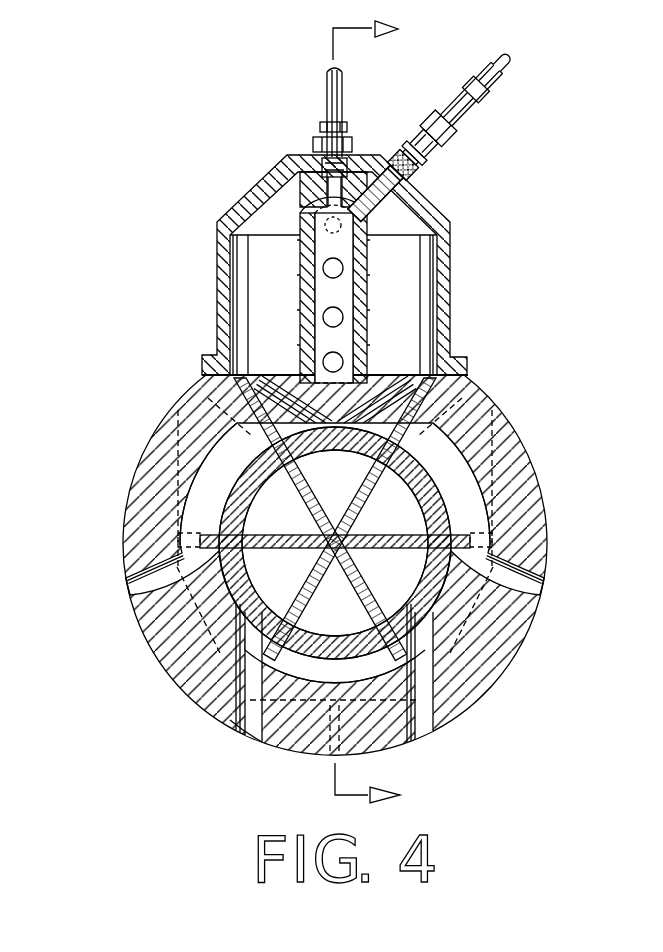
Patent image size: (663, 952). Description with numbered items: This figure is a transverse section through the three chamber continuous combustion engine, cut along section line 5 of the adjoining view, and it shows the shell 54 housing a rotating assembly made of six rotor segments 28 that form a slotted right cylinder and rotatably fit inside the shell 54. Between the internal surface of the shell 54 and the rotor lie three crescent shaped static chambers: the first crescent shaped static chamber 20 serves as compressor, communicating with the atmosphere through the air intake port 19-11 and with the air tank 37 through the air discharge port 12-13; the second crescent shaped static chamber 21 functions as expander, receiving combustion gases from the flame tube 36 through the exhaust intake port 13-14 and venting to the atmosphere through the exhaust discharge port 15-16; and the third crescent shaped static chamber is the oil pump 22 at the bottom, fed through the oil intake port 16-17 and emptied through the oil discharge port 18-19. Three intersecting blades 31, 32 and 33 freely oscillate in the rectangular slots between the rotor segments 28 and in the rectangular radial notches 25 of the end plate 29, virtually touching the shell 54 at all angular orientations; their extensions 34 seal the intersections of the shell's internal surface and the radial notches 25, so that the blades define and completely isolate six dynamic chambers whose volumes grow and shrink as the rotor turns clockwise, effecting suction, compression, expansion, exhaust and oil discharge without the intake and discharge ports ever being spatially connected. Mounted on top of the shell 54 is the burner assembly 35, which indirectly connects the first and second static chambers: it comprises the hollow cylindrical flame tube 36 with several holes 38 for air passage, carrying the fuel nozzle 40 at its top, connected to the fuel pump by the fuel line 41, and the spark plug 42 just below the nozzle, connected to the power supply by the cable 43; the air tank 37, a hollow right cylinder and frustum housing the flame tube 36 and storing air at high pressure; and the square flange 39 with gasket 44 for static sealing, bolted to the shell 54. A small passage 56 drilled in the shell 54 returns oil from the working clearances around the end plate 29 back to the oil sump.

The section line 5- 5 is at (387, 416).
The air discharge port 12-13 is at (248, 382).
The exhaust intake port 13-14 is at (420, 381).
The exhaust discharge port 15-16 is at (535, 596).
The oil intake port 16-17 is at (420, 731).
The oil discharge port 18-19 is at (243, 731).
The air intake port 19-11 is at (135, 594).
The first crescent shaped static chamber 20 is at (207, 487).
The second crescent shaped static chamber 21 is at (465, 487).
The oil pump 22 is at (303, 678).
The radial notches 25 is at (302, 535).
The rotor segments 28 is at (230, 603).
The end plate 29 is at (440, 590).
The blade 31 is at (245, 549).
The blade 32 is at (300, 593).
The blade 33 is at (302, 480).
The extensions 34 is at (210, 427).
The burner assembly 35 is at (283, 162).
The flame tube 36 is at (312, 280).
The air tank 37 is at (413, 242).
The holes 38 is at (341, 313).
The square flange 39 is at (210, 355).
The fuel nozzle 40 is at (352, 166).
The fuel line 41 is at (327, 92).
The spark plug 42 is at (412, 175).
The cable 43 is at (508, 66).
The gasket 44 is at (466, 374).
The shell 54 is at (158, 670).
The small passage 56 is at (335, 755).